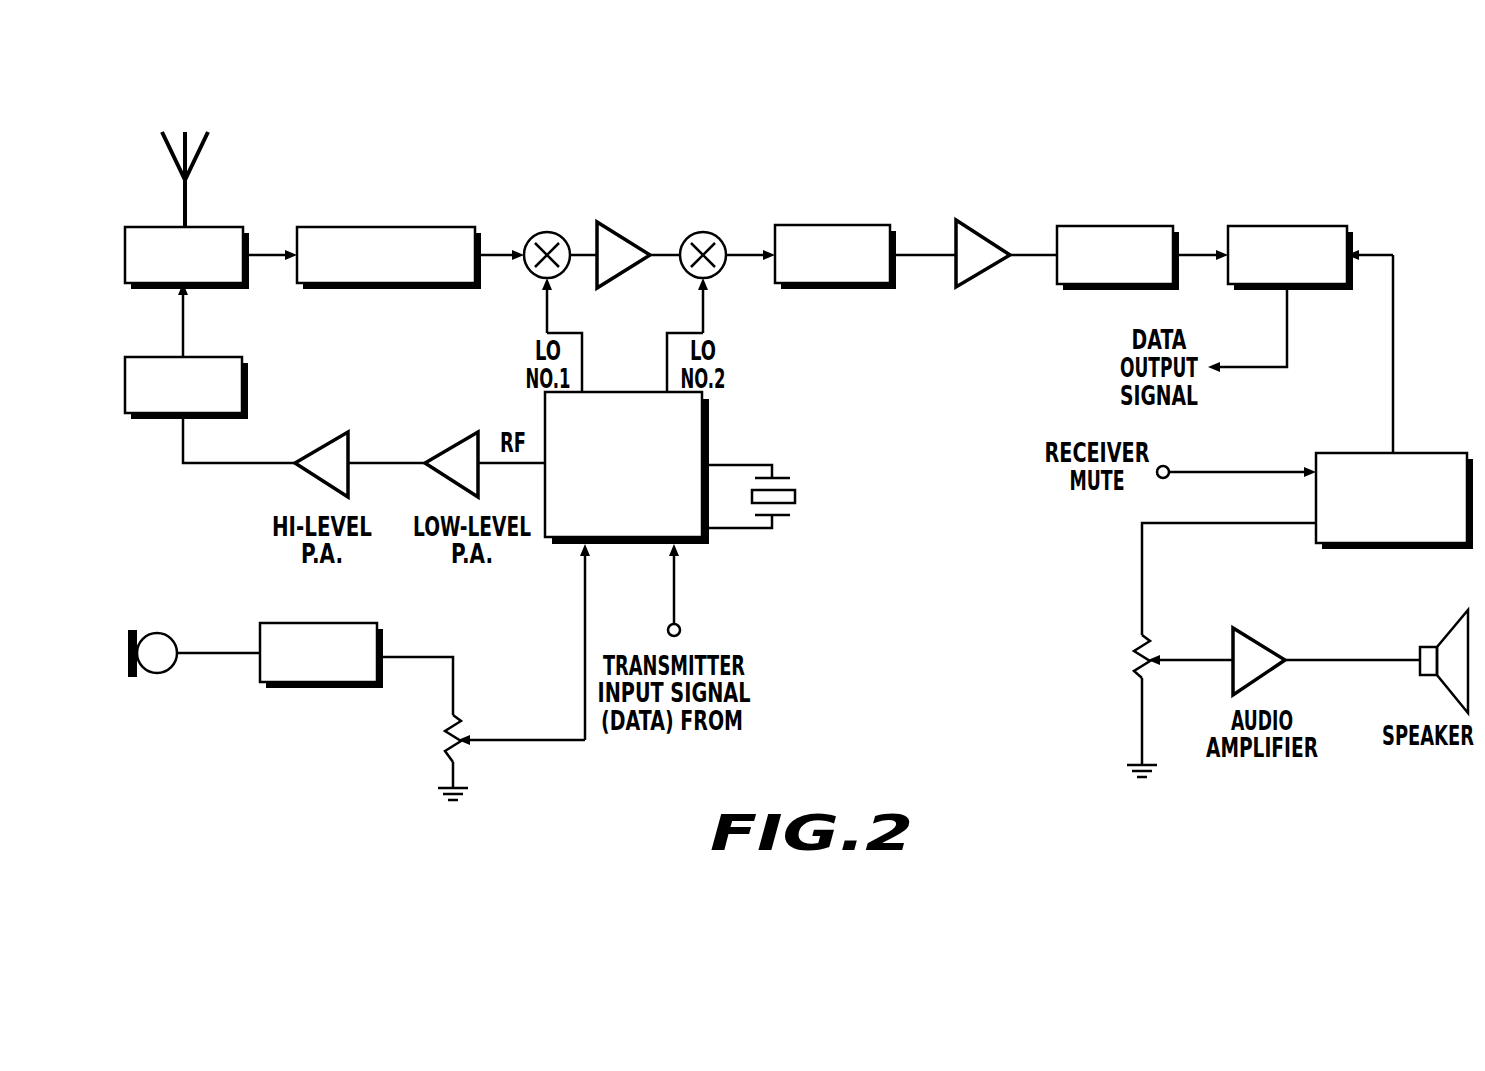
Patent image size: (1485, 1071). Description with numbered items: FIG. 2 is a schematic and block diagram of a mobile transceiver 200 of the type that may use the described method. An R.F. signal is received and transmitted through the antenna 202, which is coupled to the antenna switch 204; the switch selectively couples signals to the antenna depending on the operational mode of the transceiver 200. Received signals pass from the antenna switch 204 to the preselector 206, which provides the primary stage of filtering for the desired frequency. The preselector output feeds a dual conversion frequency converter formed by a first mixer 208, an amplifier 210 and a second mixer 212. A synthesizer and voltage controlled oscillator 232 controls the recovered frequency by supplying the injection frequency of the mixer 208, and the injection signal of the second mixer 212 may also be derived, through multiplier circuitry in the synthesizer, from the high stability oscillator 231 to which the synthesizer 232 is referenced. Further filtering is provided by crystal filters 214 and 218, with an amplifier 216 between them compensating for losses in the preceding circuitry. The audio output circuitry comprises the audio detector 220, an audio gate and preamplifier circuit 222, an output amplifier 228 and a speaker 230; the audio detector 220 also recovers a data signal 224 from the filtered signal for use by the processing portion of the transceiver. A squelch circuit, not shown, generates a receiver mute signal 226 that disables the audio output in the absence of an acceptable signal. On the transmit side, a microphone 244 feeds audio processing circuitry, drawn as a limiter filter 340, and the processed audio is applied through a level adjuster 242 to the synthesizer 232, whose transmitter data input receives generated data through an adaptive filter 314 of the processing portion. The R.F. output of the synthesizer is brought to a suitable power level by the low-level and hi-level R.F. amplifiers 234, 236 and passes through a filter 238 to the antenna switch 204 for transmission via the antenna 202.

The transceiver 200 is at (830, 99).
The antenna 202 is at (200, 157).
The antenna switch 204 is at (210, 227).
The preselector 206 is at (380, 227).
The mixer 208 is at (549, 232).
The amplifier 210 is at (617, 230).
The second mixer 212 is at (707, 232).
The crystal filter 214 is at (828, 225).
The amplifier 216 is at (978, 232).
The crystal filter 218 is at (1115, 226).
The audio detector 220 is at (1280, 226).
The audio gate and preamplifier circuit 222 is at (1393, 550).
The data signal 224 is at (1263, 362).
The receiver mute signal 226 is at (1263, 470).
The output amplifier 228 is at (1252, 630).
The speaker 230 is at (1450, 630).
The high stability oscillator 231 is at (797, 497).
The synthesizer and voltage controlled oscillator 232 is at (710, 433).
The R.F. amplifier 234 is at (472, 432).
The R.F. amplifier 236 is at (343, 432).
The filter 238 is at (210, 357).
The level adjuster 242 is at (445, 737).
The microphone 244 is at (157, 673).
The adaptive filter 314 is at (672, 749).
The limiter filter 340 is at (318, 623).